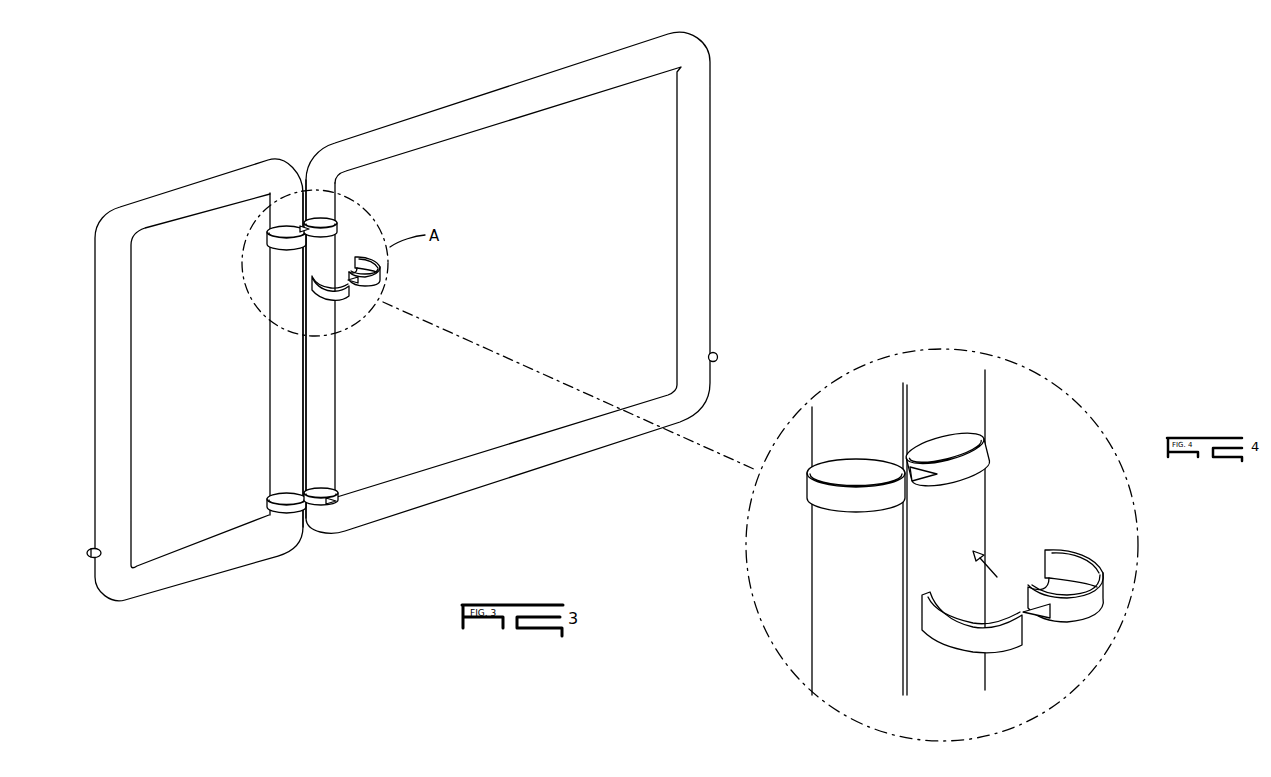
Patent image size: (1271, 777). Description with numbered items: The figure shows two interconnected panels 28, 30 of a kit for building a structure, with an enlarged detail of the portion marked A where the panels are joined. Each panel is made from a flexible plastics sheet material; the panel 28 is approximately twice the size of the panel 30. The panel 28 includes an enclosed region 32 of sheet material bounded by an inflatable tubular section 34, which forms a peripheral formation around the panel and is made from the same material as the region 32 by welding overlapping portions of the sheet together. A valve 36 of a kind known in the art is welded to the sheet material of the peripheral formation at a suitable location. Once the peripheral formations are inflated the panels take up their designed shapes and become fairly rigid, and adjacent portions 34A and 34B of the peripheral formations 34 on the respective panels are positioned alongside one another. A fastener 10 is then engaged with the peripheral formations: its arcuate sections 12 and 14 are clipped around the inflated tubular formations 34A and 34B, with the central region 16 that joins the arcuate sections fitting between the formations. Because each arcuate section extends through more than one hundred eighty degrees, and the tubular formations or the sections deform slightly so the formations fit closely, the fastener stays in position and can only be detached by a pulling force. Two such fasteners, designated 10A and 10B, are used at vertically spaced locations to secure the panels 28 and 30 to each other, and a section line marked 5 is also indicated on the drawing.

In FIG. 3, the panel 28 is at (406, 313).
In FIG. 4, the panel 28 is at (1153, 530).
In FIG. 3, the panel 30 is at (219, 147).
In FIG. 3, the enclosed region 32 is at (558, 238).
In FIG. 3, the inflatable tubular section 34 is at (527, 282).
In FIG. 3, the adjacent portion of peripheral formation 34A is at (330, 436).
In FIG. 4, the adjacent portion of peripheral formation 34A is at (984, 399).
In FIG. 3, the adjacent portion of peripheral formation 34B is at (282, 452).
In FIG. 3, the valve 36 is at (92, 559).
In FIG. 4, the fastener 10 is at (983, 455).
In FIG. 3, the fastener 10A is at (377, 281).
In FIG. 3, the fastener 10B is at (338, 507).
In FIG. 4, the arcuate section 12 is at (1100, 595).
In FIG. 4, the arcuate section 14 is at (953, 642).
In FIG. 4, the central region 16 is at (1035, 616).
In FIG. 3, the section line 5- 5 is at (270, 240).